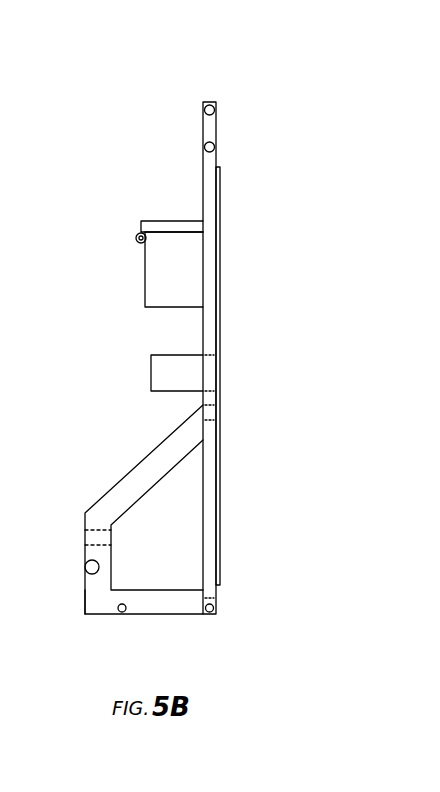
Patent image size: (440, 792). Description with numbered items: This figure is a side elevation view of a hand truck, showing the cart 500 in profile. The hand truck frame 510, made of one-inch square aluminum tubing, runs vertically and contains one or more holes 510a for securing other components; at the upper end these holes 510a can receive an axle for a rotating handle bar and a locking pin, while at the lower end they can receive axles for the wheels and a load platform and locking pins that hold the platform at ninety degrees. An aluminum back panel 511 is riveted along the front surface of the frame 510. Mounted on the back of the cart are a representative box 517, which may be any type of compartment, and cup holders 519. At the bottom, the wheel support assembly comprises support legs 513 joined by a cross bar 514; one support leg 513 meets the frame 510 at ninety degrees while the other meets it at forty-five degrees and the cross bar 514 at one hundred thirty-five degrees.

The cart 500 is at (275, 72).
The hand truck frame 510 is at (210, 175).
The holes 510a is at (215, 147).
The aluminum back panel 511 is at (221, 197).
The support legs 513 is at (142, 465).
The cross bar 514 is at (93, 596).
The box 517 is at (158, 271).
The cup holders 519 is at (170, 360).